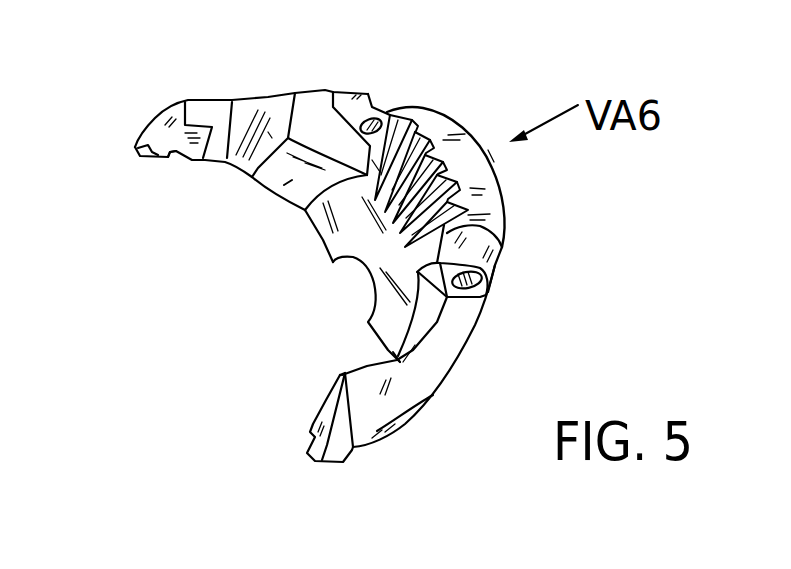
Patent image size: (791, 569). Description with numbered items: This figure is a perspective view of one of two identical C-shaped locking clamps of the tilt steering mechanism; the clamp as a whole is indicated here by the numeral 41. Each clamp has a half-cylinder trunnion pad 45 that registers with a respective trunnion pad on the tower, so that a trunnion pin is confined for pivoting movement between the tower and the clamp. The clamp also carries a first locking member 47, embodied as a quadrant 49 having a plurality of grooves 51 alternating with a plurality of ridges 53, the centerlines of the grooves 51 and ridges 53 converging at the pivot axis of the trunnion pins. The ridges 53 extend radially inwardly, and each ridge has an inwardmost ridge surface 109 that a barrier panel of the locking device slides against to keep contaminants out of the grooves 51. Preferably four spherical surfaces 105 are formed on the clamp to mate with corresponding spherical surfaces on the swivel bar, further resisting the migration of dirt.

The lower arm of clamp member 41 is at (398, 462).
The half-cylinder trunnion pad 45 is at (358, 262).
The first locking member 47 is at (379, 74).
The quadrant 49 is at (445, 152).
The grooves 51 is at (447, 187).
The ridges 53 is at (445, 168).
The spherical surfaces 105 is at (186, 153).
The inwardmost ridge surface 109 is at (305, 209).